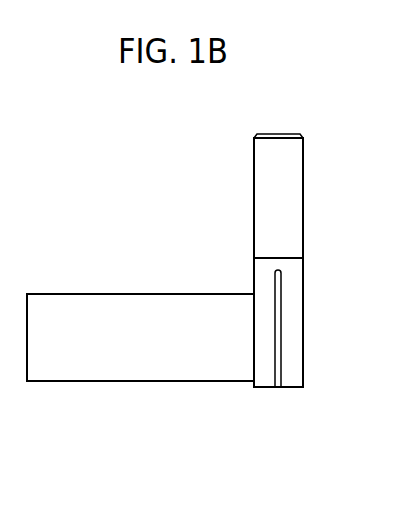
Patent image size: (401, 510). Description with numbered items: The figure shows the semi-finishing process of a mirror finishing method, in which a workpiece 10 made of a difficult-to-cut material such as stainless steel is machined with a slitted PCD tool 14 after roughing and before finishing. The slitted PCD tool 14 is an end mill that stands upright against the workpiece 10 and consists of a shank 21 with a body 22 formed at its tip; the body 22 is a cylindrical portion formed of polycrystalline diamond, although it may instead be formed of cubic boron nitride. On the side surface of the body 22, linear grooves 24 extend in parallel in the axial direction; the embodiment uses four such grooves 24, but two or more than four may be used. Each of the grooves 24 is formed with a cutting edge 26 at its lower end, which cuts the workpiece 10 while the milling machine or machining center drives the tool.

The workpiece 10 is at (121, 373).
The slitted PCD tool 14 is at (315, 183).
The shank 21 is at (262, 192).
The body 22 is at (303, 302).
The grooves 24 is at (281, 345).
The cutting edge 26 is at (264, 388).